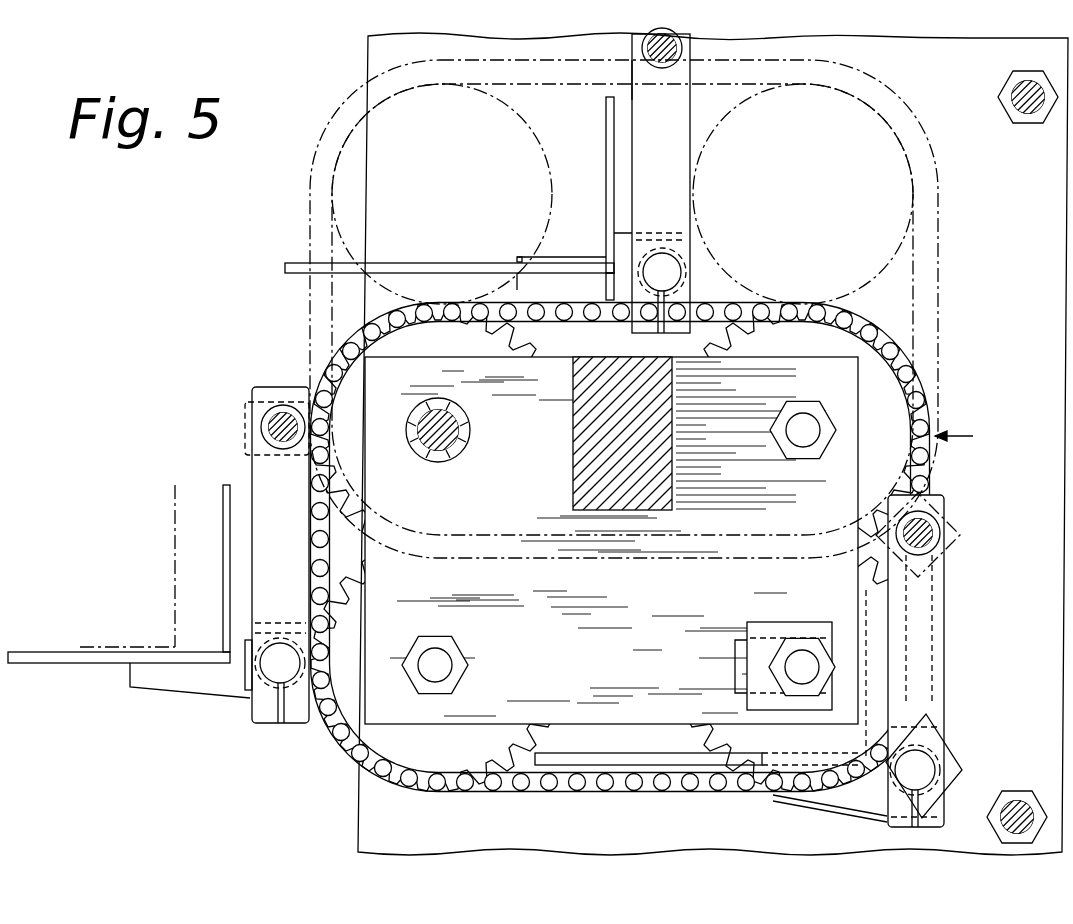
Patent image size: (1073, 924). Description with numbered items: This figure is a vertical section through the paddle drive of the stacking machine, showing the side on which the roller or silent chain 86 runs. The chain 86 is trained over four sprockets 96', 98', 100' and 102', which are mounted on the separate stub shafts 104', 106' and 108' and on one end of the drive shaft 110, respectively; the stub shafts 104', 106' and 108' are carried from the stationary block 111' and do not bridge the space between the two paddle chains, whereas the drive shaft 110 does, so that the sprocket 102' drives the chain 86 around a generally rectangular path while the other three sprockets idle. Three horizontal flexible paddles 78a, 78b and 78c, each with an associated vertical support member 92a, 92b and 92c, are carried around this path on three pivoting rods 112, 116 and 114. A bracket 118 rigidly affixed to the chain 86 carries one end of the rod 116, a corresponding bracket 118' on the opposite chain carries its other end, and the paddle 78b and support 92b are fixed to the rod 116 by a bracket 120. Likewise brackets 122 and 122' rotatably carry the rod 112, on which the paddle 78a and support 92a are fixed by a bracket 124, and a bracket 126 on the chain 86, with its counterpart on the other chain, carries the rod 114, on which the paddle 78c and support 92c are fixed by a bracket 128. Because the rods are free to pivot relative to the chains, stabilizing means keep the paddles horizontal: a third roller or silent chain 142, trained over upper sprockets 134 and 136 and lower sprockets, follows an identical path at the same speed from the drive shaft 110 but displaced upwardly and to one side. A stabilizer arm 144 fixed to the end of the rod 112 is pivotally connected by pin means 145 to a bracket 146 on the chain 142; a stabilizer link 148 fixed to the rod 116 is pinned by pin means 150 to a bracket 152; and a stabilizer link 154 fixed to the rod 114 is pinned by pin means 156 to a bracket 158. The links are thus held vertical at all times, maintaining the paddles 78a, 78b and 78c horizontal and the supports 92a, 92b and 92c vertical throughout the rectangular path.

The flexible paddle 78a is at (55, 655).
The flexible paddle 78b is at (458, 263).
The flexible paddle 78c is at (603, 757).
The roller or silent chain 86 is at (967, 433).
The vertical support member 92a is at (223, 548).
The vertical support member 92b is at (606, 124).
The vertical support member 92c is at (866, 605).
The sprocket 96' is at (840, 430).
The sprocket 98' is at (802, 682).
The sprocket 100' is at (438, 685).
The sprocket 102' is at (405, 430).
The stub shaft 104' is at (800, 449).
The stub shaft 106' is at (785, 651).
The stub shaft 108' is at (440, 645).
The drive shaft 110 is at (447, 420).
The stationary block 111' is at (611, 540).
The rod 112 is at (276, 672).
The rod 114 is at (925, 765).
The rod 116 is at (673, 270).
The bracket 118 is at (620, 520).
The bracket 118' is at (620, 547).
The bracket 120 is at (604, 286).
The bracket 122 is at (209, 714).
The bracket 122' is at (248, 665).
The bracket 124 is at (172, 688).
The bracket 126 is at (946, 772).
The bracket 128 is at (840, 806).
The sprocket 134 is at (326, 143).
The sprocket 136 is at (878, 142).
The roller or silent chain 142 is at (940, 312).
The stabilizer arm 144 is at (252, 468).
The pin means 145 is at (275, 427).
The bracket 146 is at (240, 400).
The stabilizer link 148 is at (640, 95).
The pin means 150 is at (695, 45).
The bracket 152 is at (668, 78).
The stabilizer link 154 is at (947, 630).
The pin means 156 is at (940, 520).
The bracket 158 is at (962, 536).